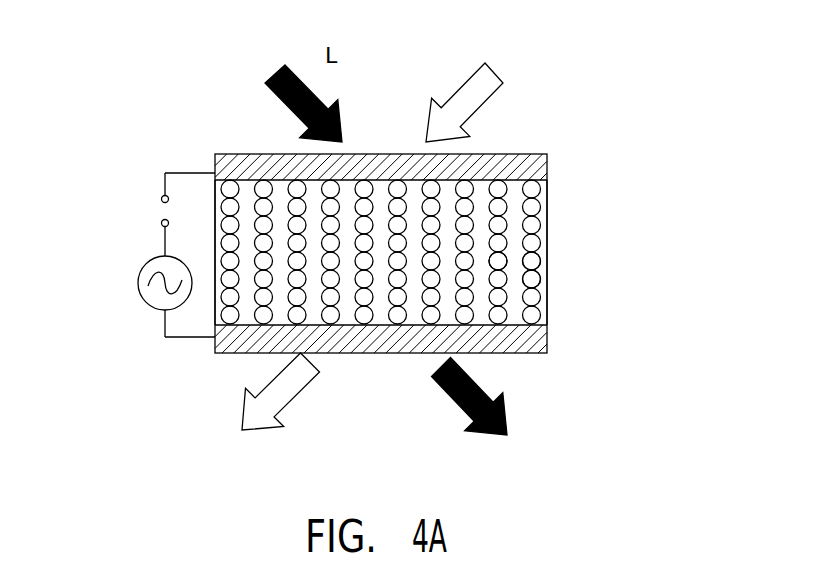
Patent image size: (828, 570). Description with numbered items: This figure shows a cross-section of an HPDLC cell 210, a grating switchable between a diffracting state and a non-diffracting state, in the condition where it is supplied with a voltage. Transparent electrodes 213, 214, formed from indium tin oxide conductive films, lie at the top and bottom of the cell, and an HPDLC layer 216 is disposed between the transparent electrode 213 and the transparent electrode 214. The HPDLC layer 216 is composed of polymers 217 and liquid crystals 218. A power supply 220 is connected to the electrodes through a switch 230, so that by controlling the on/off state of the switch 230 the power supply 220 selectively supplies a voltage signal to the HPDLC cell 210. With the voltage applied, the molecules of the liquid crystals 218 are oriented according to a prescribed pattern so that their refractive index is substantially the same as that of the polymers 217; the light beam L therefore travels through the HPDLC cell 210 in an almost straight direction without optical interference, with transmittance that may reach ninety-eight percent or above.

The HPDLC cell 210 is at (128, 70).
The transparent electrode 213 is at (517, 154).
The transparent electrode 214 is at (538, 342).
The HPDLC layer 216 is at (446, 252).
The polymers 217 is at (522, 214).
The liquid crystals 218 is at (524, 270).
The power supply 220 is at (152, 310).
The switch 230 is at (156, 217).